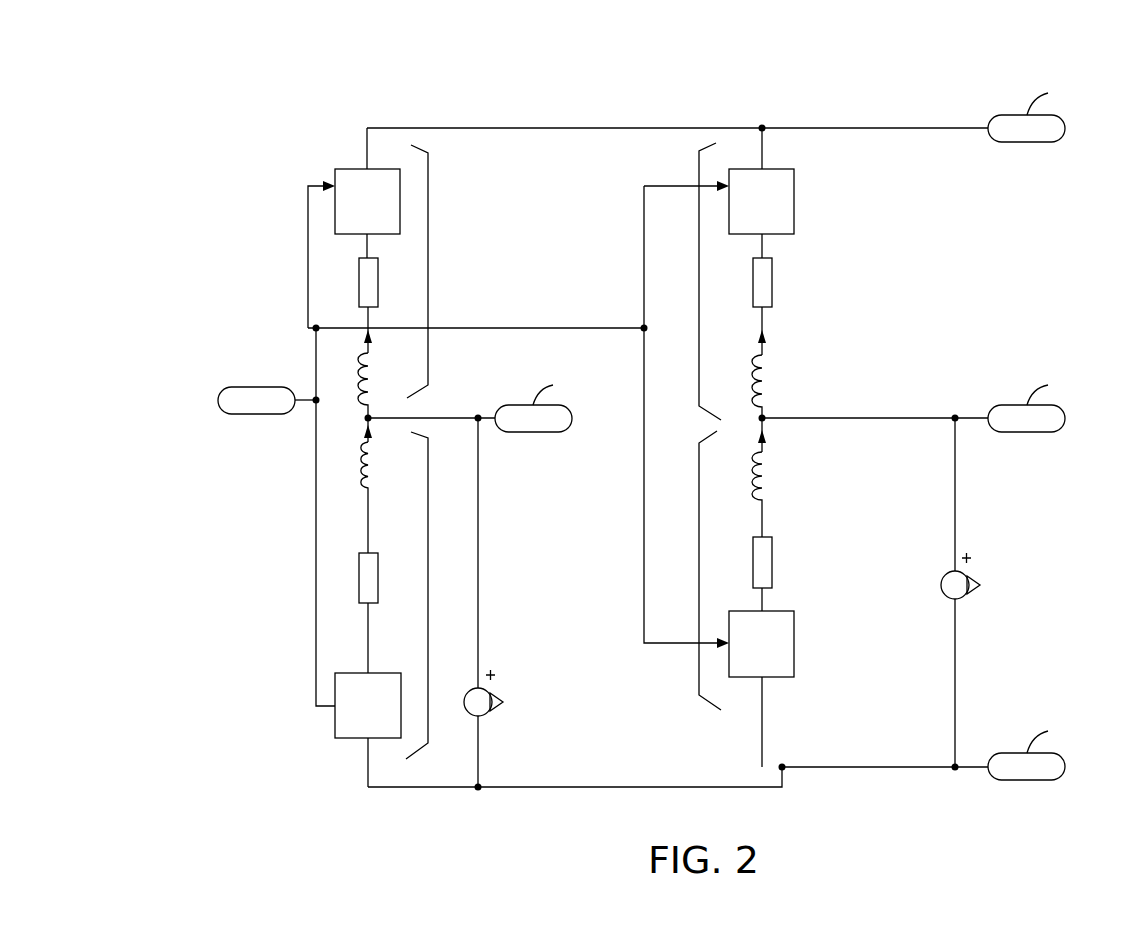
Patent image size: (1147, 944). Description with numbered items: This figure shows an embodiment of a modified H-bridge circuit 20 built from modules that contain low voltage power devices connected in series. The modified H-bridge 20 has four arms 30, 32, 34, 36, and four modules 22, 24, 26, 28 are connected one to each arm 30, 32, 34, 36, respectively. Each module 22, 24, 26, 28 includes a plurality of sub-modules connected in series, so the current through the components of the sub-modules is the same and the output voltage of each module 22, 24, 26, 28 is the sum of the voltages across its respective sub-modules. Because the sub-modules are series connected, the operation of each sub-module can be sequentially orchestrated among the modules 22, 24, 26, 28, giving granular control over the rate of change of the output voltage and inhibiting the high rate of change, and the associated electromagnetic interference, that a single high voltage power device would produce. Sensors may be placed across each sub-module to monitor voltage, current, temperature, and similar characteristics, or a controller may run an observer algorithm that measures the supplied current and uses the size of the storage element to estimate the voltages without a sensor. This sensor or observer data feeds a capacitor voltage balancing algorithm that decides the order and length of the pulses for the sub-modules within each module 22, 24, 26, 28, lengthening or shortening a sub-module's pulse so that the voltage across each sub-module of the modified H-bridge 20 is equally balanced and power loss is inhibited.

The modified H-bridge circuit 20 is at (183, 95).
The module 22 is at (352, 168).
The module 24 is at (335, 726).
The module 26 is at (795, 200).
The module 28 is at (795, 642).
The arm 30 is at (428, 242).
The arm 32 is at (428, 575).
The arm 34 is at (699, 288).
The arm 36 is at (699, 578).